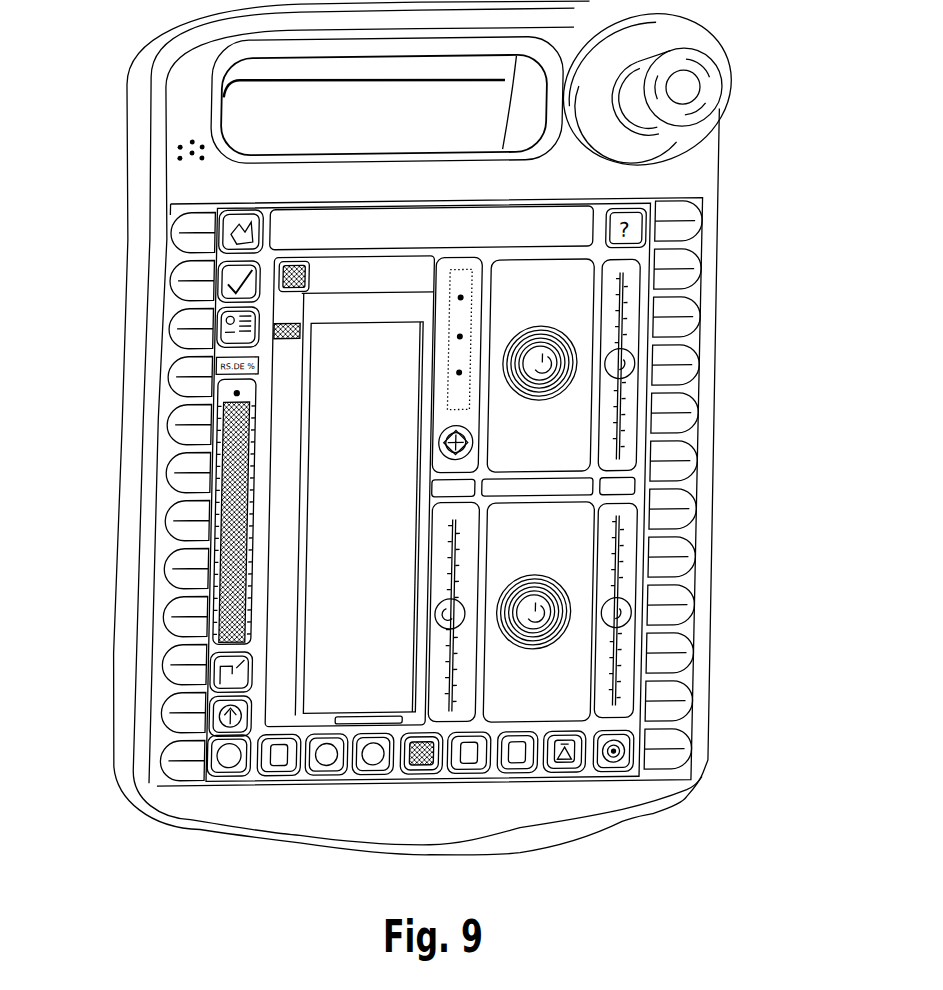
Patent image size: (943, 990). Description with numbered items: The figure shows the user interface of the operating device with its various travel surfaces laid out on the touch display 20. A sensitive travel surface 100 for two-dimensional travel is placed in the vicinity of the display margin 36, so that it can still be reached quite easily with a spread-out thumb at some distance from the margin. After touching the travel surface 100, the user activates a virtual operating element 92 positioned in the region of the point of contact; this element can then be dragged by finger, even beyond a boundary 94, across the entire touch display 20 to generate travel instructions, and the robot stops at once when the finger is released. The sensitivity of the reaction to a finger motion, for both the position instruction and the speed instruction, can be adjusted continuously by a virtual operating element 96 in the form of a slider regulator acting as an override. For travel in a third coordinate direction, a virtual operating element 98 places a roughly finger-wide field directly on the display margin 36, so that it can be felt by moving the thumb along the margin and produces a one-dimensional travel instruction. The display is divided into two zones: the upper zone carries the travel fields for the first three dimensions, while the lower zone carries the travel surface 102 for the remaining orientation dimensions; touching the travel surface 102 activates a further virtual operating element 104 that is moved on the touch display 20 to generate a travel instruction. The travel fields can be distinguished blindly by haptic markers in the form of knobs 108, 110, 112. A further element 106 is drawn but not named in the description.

The touch display 20 is at (378, 515).
The display margin 36 is at (699, 441).
The virtual operating element 92 is at (538, 330).
The boundary 94 is at (647, 265).
The virtual operating element (slider regulator) 96 is at (216, 524).
The virtual operating element 98 is at (633, 367).
The travel surface 100 is at (558, 453).
The travel surface 102 is at (556, 705).
The virtual operating element 104 is at (537, 577).
The slider knob 106 is at (634, 618).
The knob 108 is at (640, 489).
The knob 110 is at (696, 771).
The knob 112 is at (705, 198).